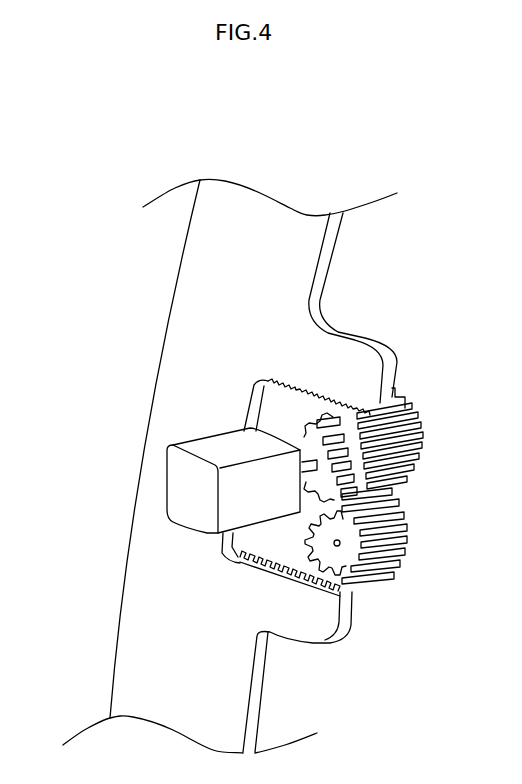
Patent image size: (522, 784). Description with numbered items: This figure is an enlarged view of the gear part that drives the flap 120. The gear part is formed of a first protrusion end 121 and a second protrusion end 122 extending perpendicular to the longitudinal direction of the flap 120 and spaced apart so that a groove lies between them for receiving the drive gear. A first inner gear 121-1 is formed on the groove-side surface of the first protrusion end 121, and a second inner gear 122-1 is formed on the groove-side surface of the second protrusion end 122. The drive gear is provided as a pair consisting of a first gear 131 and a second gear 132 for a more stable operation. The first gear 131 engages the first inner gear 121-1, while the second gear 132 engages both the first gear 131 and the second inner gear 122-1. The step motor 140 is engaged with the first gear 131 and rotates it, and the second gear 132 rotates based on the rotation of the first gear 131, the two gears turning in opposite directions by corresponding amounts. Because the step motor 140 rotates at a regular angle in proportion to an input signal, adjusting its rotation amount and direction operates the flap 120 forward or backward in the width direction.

The flap 120 is at (267, 217).
The first protrusion end 121 is at (300, 620).
The first inner gear 121-1 is at (223, 542).
The second protrusion end 122 is at (363, 365).
The second inner gear 122-1 is at (307, 397).
The first gear 131 is at (400, 527).
The second gear 132 is at (413, 422).
The step motor 140 is at (183, 485).